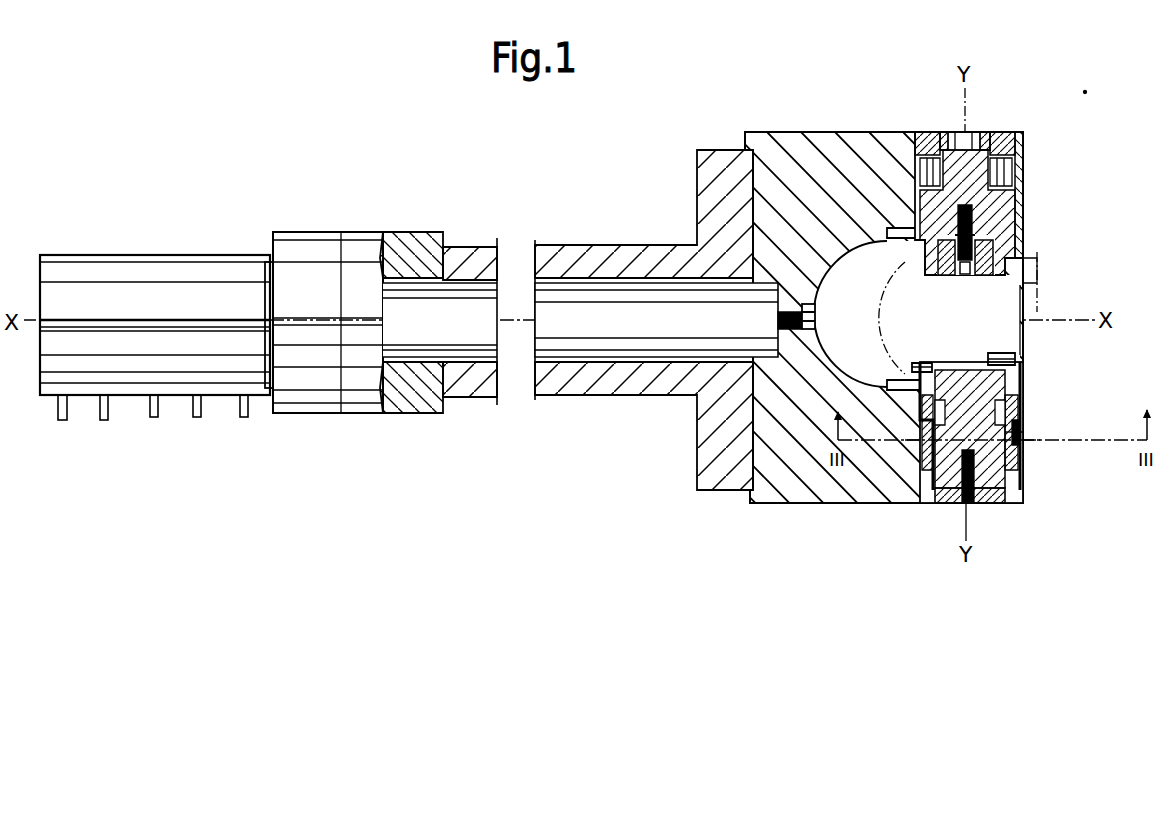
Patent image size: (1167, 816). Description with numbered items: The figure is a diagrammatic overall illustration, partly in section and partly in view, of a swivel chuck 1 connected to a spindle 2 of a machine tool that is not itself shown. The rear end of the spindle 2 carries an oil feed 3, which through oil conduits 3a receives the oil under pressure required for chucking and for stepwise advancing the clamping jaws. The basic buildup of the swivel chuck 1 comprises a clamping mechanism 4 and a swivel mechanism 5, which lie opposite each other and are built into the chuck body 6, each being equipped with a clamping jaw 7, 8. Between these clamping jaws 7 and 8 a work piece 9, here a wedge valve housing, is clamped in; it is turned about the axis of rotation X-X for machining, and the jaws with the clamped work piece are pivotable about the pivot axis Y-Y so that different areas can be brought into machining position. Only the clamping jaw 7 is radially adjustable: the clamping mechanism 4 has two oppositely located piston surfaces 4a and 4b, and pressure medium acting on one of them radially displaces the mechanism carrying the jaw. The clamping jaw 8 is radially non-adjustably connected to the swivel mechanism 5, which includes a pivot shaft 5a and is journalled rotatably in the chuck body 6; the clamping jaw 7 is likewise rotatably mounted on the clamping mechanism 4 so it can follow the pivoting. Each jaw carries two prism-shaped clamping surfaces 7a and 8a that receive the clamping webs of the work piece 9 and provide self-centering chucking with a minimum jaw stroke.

The swivel chuck 1 is at (729, 306).
The spindle 2 is at (535, 400).
The oil feed 3 is at (130, 270).
The oil conduits 3a is at (100, 420).
The clamping mechanism 4 is at (992, 201).
The piston surface 4a is at (1012, 218).
The piston surface 4b is at (993, 182).
The swivel mechanism 5 is at (993, 412).
The pivot shaft 5a is at (1012, 434).
The chuck body 6 is at (801, 502).
The clamping jaw 7 is at (1010, 258).
The prism-shaped clamping surfaces 7a is at (965, 276).
The clamping jaw 8 is at (945, 368).
The prism-shaped clamping surfaces 8a is at (914, 362).
The work piece 9 is at (1045, 293).